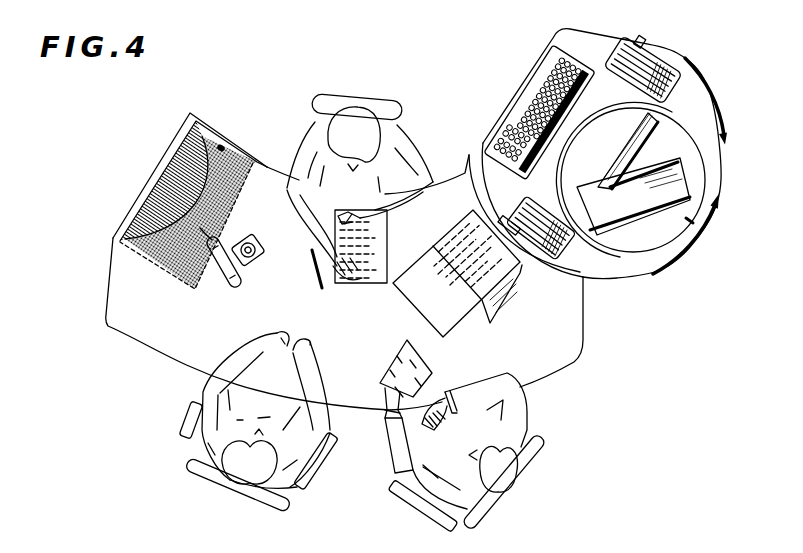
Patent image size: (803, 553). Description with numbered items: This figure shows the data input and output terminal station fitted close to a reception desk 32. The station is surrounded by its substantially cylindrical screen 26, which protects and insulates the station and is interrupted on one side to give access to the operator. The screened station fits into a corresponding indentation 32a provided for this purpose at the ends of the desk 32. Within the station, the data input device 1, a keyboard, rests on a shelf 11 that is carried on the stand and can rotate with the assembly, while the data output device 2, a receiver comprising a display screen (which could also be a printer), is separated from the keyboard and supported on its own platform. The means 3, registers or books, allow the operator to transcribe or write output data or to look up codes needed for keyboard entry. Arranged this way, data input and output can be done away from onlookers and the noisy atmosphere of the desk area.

The data input device 1 is at (532, 90).
The data output device 2 is at (620, 156).
The means permitting to transcribe or write output data 3 is at (650, 70).
The shelf 11 is at (543, 194).
The screen 26 is at (617, 279).
The desk 32 is at (357, 337).
The indentation 32a is at (202, 136).